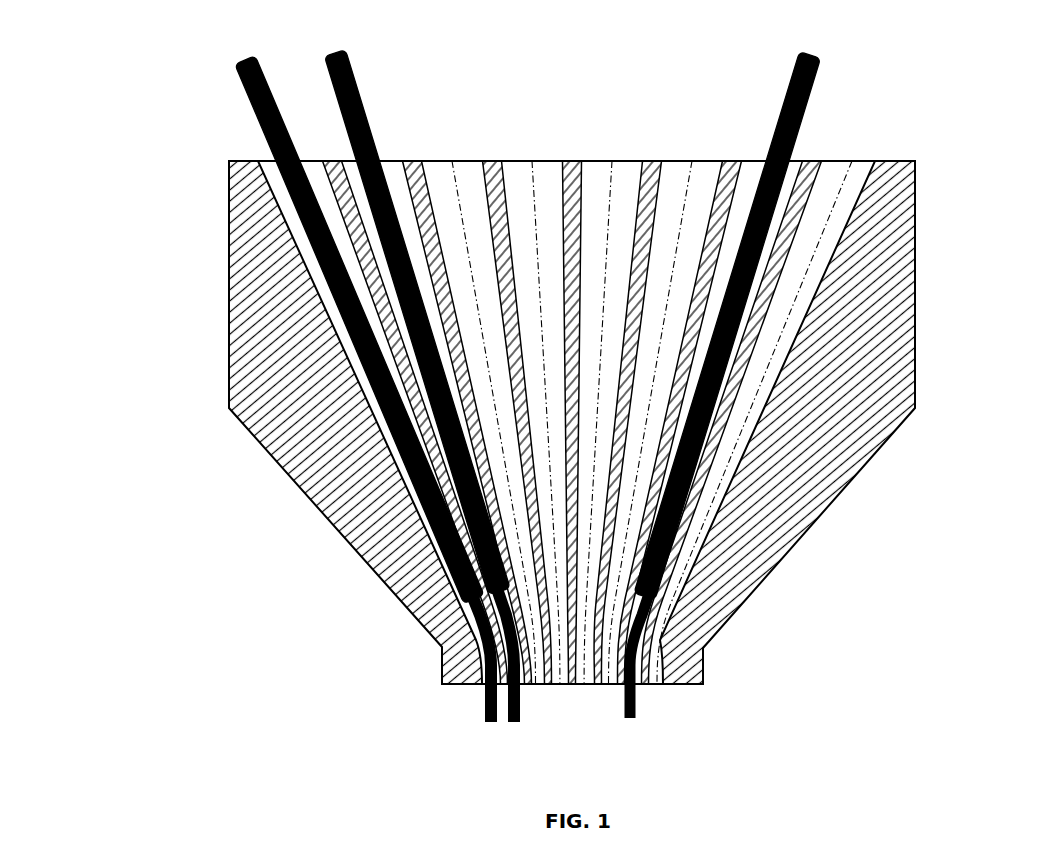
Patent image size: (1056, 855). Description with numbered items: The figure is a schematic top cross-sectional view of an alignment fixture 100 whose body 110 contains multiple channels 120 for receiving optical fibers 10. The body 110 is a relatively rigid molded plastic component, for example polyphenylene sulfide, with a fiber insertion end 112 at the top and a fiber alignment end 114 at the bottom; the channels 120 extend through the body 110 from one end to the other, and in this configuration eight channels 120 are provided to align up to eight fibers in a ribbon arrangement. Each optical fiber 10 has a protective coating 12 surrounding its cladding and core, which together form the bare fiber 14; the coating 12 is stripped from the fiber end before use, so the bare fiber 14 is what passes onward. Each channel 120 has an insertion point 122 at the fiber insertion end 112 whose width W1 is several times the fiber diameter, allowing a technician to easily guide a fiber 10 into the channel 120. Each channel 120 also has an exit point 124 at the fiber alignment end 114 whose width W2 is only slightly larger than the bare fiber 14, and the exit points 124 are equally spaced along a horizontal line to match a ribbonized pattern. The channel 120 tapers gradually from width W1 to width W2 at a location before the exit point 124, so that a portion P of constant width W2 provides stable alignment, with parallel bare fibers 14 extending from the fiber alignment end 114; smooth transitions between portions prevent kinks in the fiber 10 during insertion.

The alignment fixture 100 is at (541, 397).
The optical fiber 10 is at (530, 327).
The protective coating 12 is at (277, 140).
The bare fiber 14 is at (485, 705).
The body 110 is at (915, 293).
The fiber insertion end 112 is at (925, 141).
The fiber alignment end 114 is at (678, 700).
The channel 120 is at (600, 146).
The insertion point 122 is at (640, 162).
The exit point 124 is at (588, 686).
The width of insertion point W1 is at (563, 161).
The width of exit point W2 is at (552, 686).
The portion of consistent width P is at (747, 708).